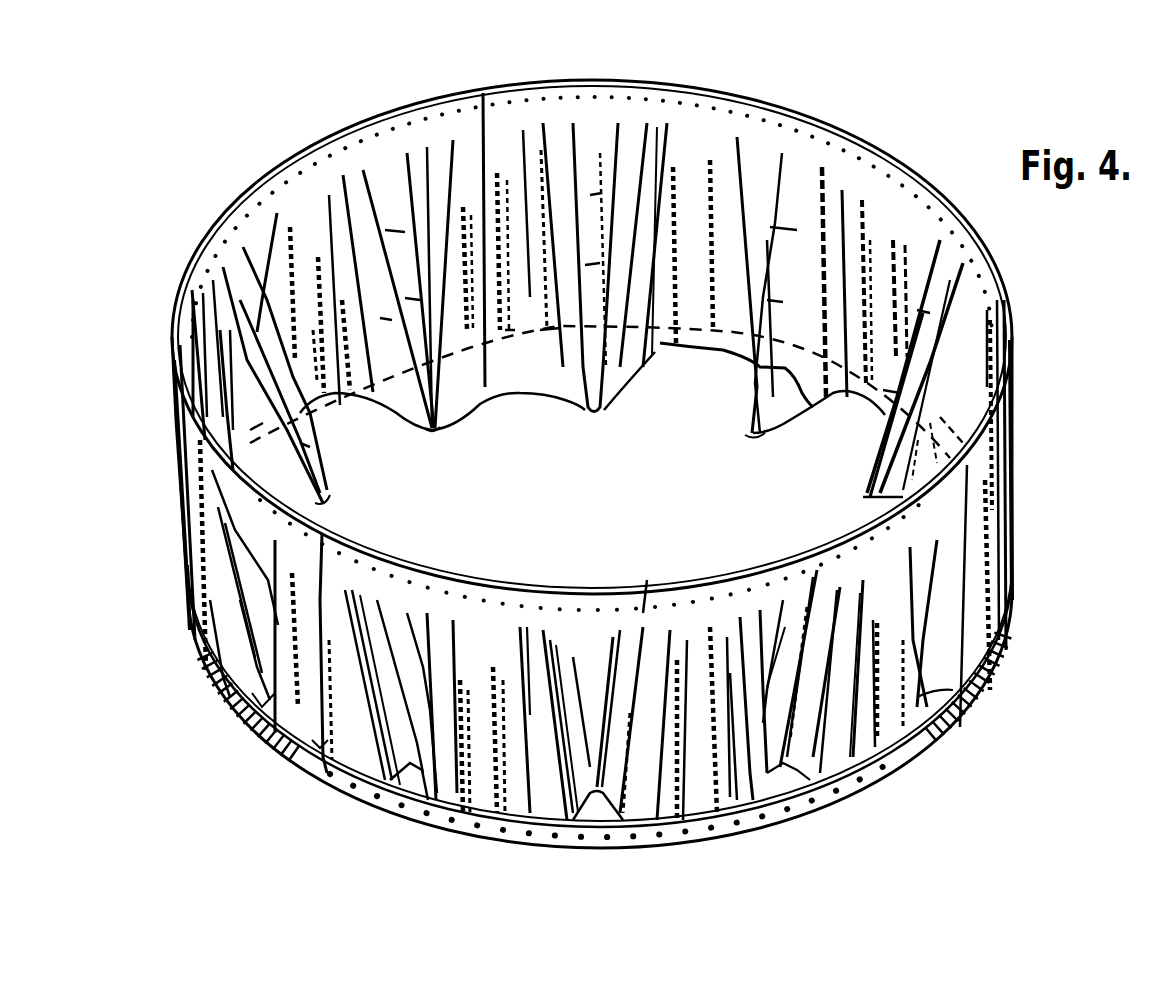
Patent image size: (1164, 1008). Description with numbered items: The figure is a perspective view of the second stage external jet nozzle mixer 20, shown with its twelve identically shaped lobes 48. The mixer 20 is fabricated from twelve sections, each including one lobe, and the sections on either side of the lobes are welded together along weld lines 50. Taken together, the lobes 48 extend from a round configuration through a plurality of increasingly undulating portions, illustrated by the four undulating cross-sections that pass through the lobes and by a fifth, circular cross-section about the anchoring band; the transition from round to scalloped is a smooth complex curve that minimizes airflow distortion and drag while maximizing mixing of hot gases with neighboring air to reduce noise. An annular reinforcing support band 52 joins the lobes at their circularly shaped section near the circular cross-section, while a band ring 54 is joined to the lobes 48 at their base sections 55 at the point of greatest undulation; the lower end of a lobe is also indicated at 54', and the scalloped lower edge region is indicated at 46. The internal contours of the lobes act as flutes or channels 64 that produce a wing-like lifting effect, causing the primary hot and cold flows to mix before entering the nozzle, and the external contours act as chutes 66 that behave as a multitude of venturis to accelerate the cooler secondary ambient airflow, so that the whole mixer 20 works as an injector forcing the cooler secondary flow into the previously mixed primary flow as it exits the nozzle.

The second stage external jet nozzle mixer 20 is at (318, 126).
The scalloped lower edge of pleats 46 is at (470, 427).
The lobes 48 is at (757, 433).
The weld lines 50 is at (490, 150).
The annular reinforcing support band 52 is at (887, 150).
The band ring 54 is at (607, 701).
The pleat bottom 54' is at (437, 285).
The base sections 55 is at (660, 343).
The flutes or channels 64 is at (318, 470).
The chutes 66 is at (403, 800).